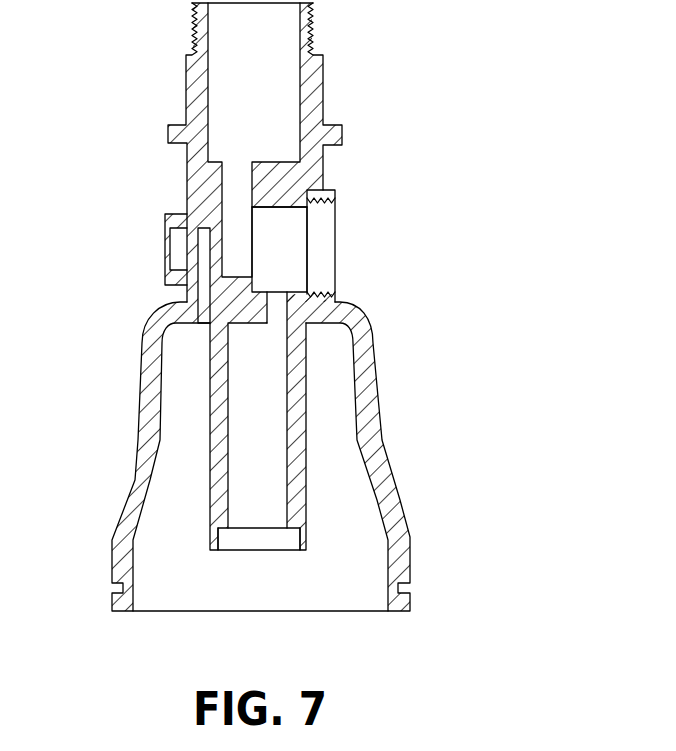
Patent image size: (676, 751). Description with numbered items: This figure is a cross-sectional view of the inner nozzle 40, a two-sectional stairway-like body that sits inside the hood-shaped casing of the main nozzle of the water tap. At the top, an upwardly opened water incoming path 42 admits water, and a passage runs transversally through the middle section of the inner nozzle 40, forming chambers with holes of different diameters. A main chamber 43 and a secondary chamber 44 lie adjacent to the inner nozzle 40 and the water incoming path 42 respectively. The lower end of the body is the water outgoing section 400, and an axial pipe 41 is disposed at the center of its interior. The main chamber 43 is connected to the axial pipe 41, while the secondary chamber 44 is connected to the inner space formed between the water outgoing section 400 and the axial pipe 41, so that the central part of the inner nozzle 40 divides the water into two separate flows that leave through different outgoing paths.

The inner nozzle 40 is at (325, 307).
The axial pipe 41 is at (300, 422).
The water incoming path 42 is at (235, 205).
The main chamber 43 is at (283, 255).
The secondary chamber 44 is at (207, 247).
The water outgoing section 400 is at (377, 505).